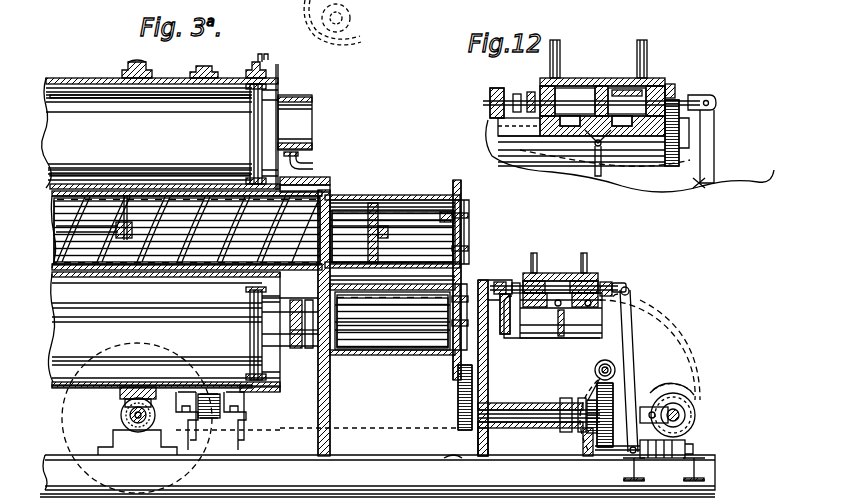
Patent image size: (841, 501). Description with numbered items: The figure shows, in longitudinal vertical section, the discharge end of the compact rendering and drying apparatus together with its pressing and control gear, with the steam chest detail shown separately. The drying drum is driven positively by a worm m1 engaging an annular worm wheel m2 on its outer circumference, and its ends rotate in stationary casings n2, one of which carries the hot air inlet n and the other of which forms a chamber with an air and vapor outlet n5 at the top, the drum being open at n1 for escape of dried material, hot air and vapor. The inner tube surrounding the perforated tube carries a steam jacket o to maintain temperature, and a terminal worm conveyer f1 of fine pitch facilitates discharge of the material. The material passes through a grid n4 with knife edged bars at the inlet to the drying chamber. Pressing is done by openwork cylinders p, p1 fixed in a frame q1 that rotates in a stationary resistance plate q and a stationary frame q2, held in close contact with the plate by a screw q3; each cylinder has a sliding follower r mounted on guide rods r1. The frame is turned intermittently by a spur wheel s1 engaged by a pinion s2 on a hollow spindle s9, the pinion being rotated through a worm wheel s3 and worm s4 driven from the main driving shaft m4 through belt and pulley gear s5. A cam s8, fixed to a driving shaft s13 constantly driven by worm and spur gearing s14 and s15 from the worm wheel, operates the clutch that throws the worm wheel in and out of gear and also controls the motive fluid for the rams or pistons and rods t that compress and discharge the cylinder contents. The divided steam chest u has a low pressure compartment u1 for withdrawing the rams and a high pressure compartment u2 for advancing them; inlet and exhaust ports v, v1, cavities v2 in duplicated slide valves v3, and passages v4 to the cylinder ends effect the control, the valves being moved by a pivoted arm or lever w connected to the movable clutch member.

In FIG. 3A, the worm m1 is at (101, 411).
In FIG. 3A, the annular worm wheel m2 is at (132, 62).
In FIG. 3A, the main driving shaft m4 is at (138, 418).
In FIG. 3A, the inlet n is at (294, 119).
In FIG. 3A, the open end n1 is at (312, 290).
In FIG. 3A, the stationary casing n2 is at (272, 78).
In FIG. 3A, the grid n4 is at (348, 16).
In FIG. 3A, the air and vapor outlet n5 is at (356, 44).
In FIG. 3A, the steam jacket o is at (316, 172).
In FIG. 3A, the terminal worm conveyer f1 is at (338, 196).
In FIG. 3A, the perforated cylinder p is at (392, 200).
In FIG. 3A, the perforated cylinder p1 is at (432, 350).
In FIG. 3A, the stationary resistance plate q is at (326, 422).
In FIG. 12, the stationary resistance plate q is at (517, 92).
In FIG. 3A, the frame q1 is at (332, 396).
In FIG. 3A, the stationary frame q2 is at (441, 356).
In FIG. 3A, the screw q3 is at (522, 284).
In FIG. 3A, the follower r is at (404, 218).
In FIG. 3A, the guide rods r1 is at (450, 216).
In FIG. 3A, the spur wheel s1 is at (462, 190).
In FIG. 3A, the pinion s2 is at (458, 420).
In FIG. 3A, the worm wheel s3 is at (612, 440).
In FIG. 3A, the worm s4 is at (615, 369).
In FIG. 3A, the belt and pulley gear s5 is at (372, 428).
In FIG. 12, the belt and pulley gear s5 is at (704, 186).
In FIG. 3A, the cam s8 is at (696, 415).
In FIG. 3A, the hollow spindle s9 is at (522, 435).
In FIG. 3A, the driving shaft s13 is at (690, 402).
In FIG. 3A, the worm gearing s14 is at (700, 466).
In FIG. 3A, the spur gearing s15 is at (628, 390).
In FIG. 3A, the rams or pistons and rods t is at (472, 290).
In FIG. 3A, the divided steam chest u is at (588, 276).
In FIG. 12, the divided steam chest u is at (618, 78).
In FIG. 3A, the low pressure compartment u1 is at (586, 282).
In FIG. 12, the low pressure compartment u1 is at (620, 88).
In FIG. 3A, the high pressure compartment u2 is at (610, 281).
In FIG. 12, the high pressure compartment u2 is at (672, 88).
In FIG. 3A, the inlet port v is at (530, 333).
In FIG. 12, the inlet port v is at (566, 92).
In FIG. 3A, the exhaust port v1 is at (530, 294).
In FIG. 12, the exhaust port v1 is at (648, 186).
In FIG. 3A, the cavity v2 is at (620, 292).
In FIG. 12, the cavity v2 is at (710, 103).
In FIG. 3A, the slide valve v3 is at (541, 282).
In FIG. 12, the slide valve v3 is at (630, 82).
In FIG. 3A, the ports or passages v4 is at (514, 340).
In FIG. 12, the ports or passages v4 is at (506, 150).
In FIG. 3A, the pivoted arm or lever w is at (640, 312).
In FIG. 12, the pivoted arm or lever w is at (703, 152).